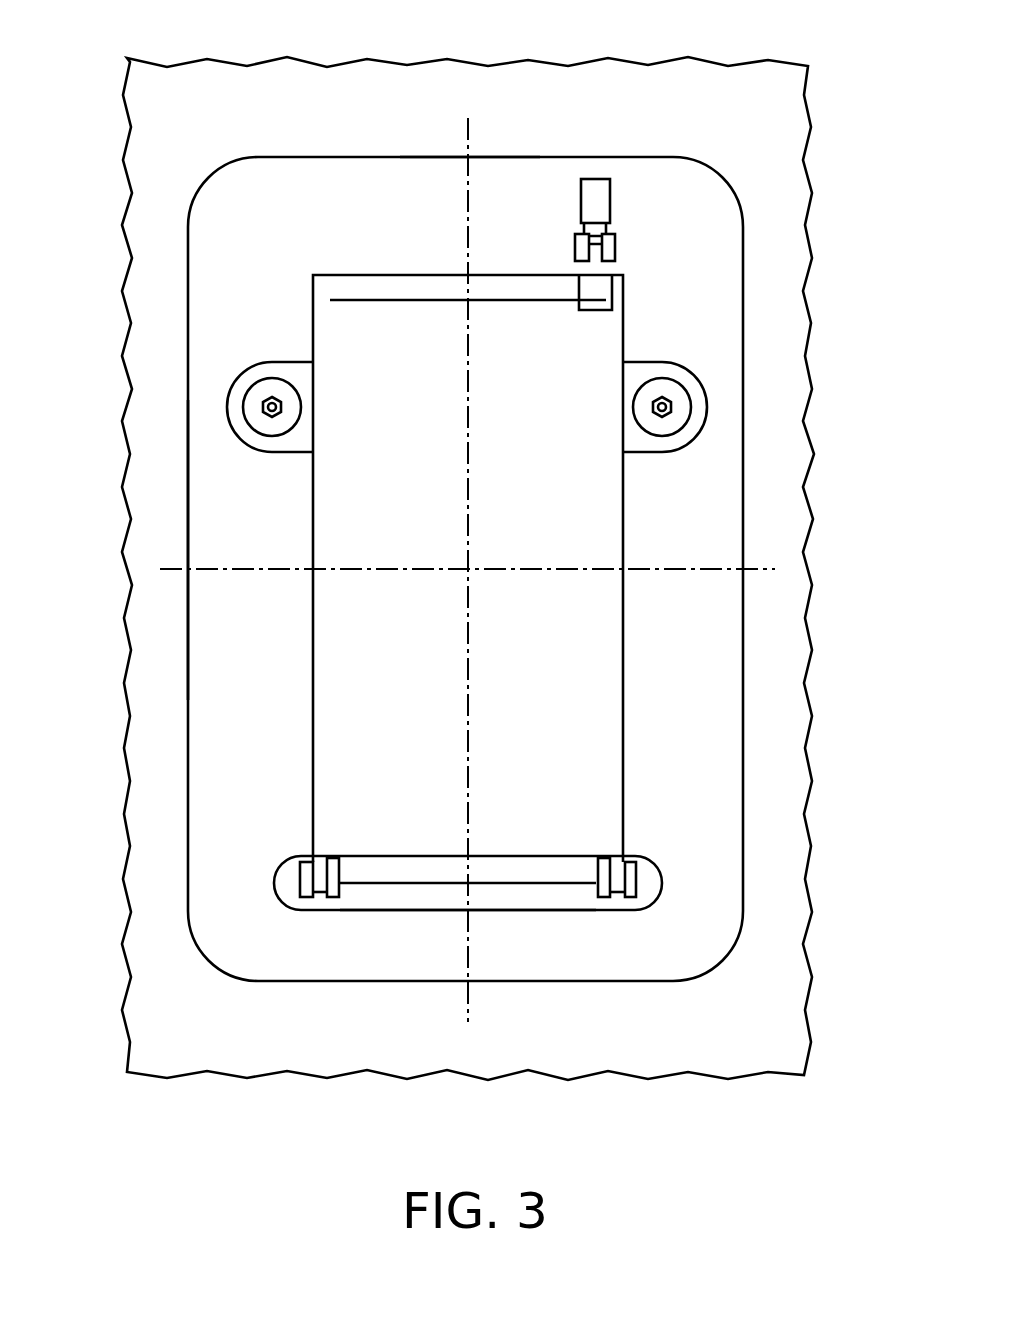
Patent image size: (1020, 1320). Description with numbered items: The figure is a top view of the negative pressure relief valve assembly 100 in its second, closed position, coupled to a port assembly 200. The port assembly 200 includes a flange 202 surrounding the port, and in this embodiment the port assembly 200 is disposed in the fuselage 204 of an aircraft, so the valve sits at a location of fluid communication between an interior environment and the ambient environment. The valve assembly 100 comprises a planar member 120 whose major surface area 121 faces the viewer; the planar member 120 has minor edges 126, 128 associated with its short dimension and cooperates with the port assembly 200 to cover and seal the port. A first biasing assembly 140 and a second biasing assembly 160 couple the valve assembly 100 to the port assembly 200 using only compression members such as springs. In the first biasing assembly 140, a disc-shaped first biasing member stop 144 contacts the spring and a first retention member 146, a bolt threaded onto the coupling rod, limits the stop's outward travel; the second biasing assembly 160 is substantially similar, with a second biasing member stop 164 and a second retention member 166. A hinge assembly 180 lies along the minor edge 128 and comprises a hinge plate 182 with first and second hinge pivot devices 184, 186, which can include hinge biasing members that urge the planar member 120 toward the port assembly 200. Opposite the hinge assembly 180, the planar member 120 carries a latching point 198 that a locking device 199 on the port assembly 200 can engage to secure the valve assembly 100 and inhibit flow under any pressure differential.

The negative pressure relief valve assembly 100 is at (400, 140).
The planar member 120 is at (468, 572).
The major surface area 121 is at (472, 482).
The minor edge 126 is at (488, 157).
The minor edge 128 is at (447, 857).
The first biasing assembly 140 is at (716, 386).
The first biasing member stop 144 is at (640, 408).
The first retention member 146 is at (663, 396).
The second biasing assembly 160 is at (220, 383).
The second biasing member stop 164 is at (300, 411).
The second retention member 166 is at (270, 396).
The hinge assembly 180 is at (553, 925).
The hinge plate 182 is at (493, 898).
The first hinge pivot device 184 is at (305, 898).
The second hinge pivot device 186 is at (632, 900).
The latching point 198 is at (600, 292).
The locking device 199 is at (608, 224).
The port assembly 200 is at (158, 820).
The flange 202 is at (200, 645).
The fuselage 204 is at (798, 516).